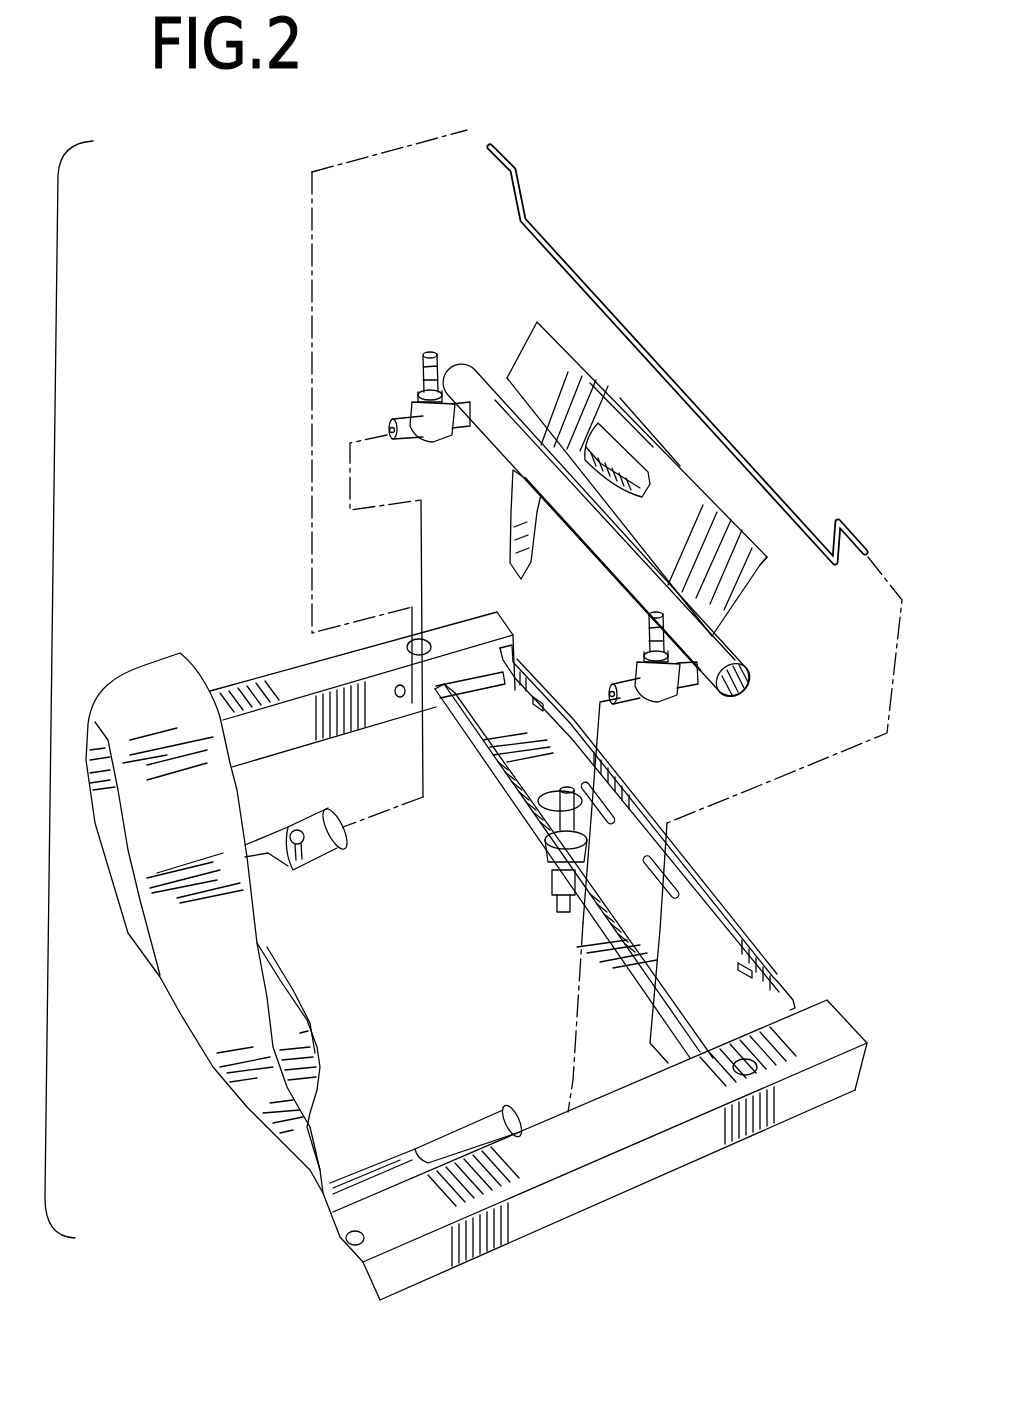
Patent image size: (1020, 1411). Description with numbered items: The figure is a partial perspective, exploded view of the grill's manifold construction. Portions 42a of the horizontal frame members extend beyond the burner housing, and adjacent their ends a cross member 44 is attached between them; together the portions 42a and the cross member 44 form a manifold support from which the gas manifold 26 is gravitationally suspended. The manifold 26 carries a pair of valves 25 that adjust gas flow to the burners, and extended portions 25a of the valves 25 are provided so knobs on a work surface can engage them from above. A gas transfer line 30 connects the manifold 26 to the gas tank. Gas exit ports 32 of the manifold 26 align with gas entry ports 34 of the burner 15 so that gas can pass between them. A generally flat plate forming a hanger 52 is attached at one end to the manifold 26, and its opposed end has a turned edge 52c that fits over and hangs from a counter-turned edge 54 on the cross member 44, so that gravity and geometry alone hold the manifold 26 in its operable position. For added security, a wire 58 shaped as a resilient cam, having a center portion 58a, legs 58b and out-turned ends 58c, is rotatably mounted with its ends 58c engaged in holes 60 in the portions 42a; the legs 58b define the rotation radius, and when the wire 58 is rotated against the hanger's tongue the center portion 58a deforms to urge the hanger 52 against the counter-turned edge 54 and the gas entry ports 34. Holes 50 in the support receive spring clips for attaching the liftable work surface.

The burner 15 is at (270, 860).
The valves 25 is at (418, 406).
The extended portions of valves 25a is at (438, 368).
The gas manifold 26 is at (612, 553).
The gas transfer line 30 is at (524, 572).
The gas exit ports 32 is at (403, 440).
The gas entry ports 34 is at (311, 822).
The portions of horizontal members 42a is at (293, 687).
The cross member 44 is at (713, 1000).
The holes 50 is at (413, 634).
The hanger 52 is at (697, 586).
The turned edge 52c is at (770, 557).
The counter-turned edge 54 is at (510, 797).
The wire 58 is at (595, 292).
The center portion of wire 58a is at (662, 366).
The legs of wire 58b is at (524, 190).
The out-turned ends of wire 58c is at (506, 140).
The holes 60 is at (400, 699).